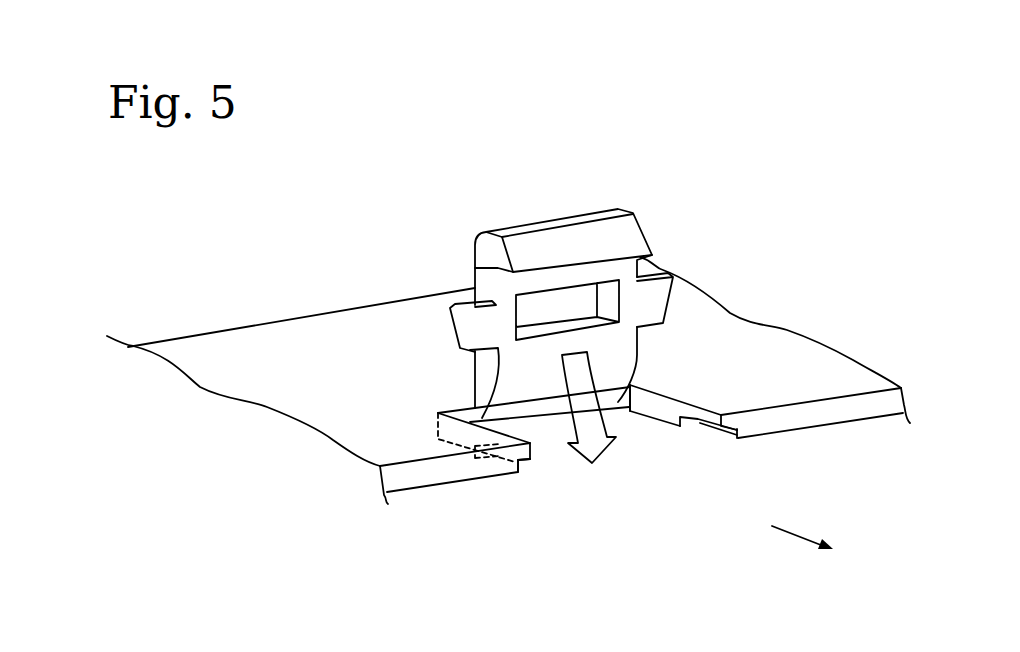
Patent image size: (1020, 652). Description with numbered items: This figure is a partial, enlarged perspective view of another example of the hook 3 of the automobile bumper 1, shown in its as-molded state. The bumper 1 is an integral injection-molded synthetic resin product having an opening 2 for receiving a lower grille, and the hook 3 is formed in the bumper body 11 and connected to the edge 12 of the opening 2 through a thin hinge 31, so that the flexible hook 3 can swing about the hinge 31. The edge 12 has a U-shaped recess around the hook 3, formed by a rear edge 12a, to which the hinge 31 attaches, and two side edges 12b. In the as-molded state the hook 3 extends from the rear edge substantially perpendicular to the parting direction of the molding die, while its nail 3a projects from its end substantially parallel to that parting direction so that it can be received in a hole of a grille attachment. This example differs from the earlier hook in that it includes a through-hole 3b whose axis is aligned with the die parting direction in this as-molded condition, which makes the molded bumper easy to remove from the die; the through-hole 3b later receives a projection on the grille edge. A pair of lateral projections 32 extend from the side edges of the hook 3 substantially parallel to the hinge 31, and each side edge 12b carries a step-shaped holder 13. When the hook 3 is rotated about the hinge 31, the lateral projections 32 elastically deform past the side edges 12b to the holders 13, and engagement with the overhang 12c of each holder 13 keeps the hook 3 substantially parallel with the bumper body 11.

The automobile bumper 1 is at (773, 231).
The opening 2 is at (272, 244).
The hook 3 is at (512, 284).
The nail 3a is at (597, 240).
The through-hole 3b is at (645, 262).
The bumper body 11 is at (215, 347).
The edge of the opening 12 is at (790, 420).
The rear edge 12a is at (613, 405).
The side edge 12b is at (653, 403).
The overhang 12c is at (708, 420).
The holder 13 is at (727, 437).
The thin hinge 31 is at (463, 413).
The lateral projection 32 is at (480, 325).